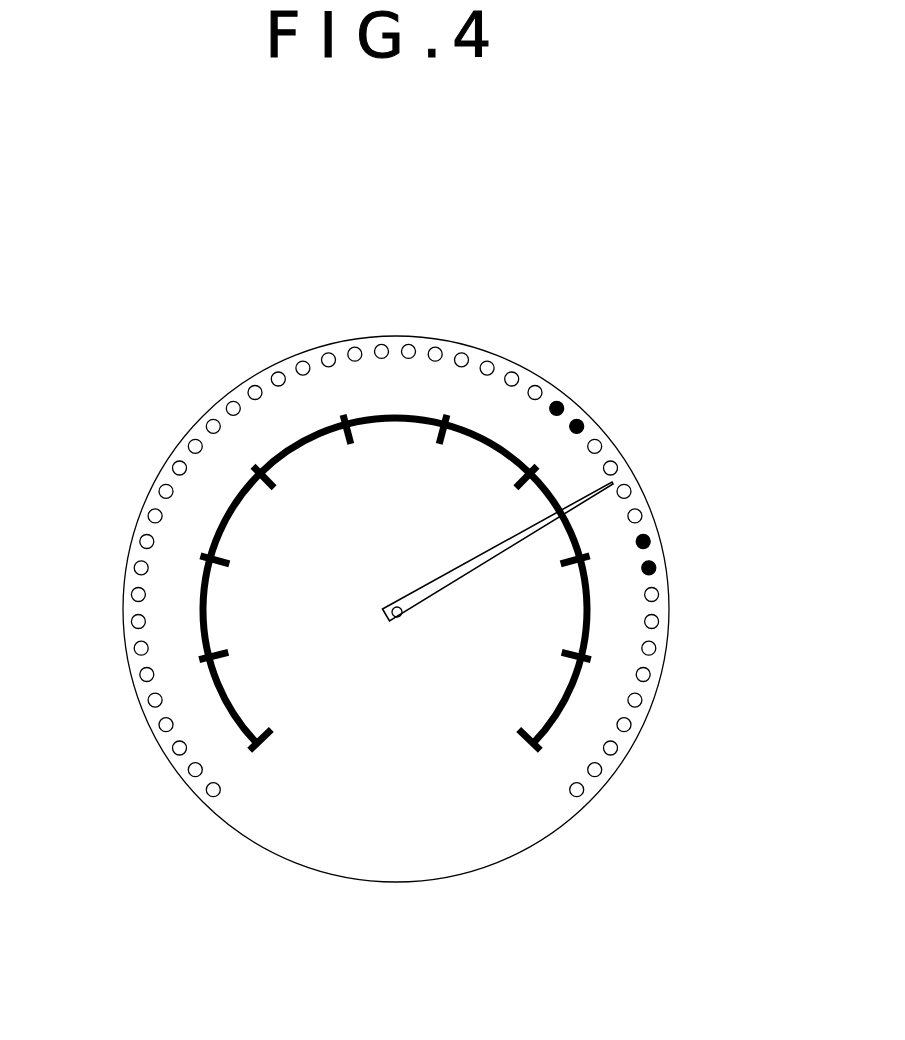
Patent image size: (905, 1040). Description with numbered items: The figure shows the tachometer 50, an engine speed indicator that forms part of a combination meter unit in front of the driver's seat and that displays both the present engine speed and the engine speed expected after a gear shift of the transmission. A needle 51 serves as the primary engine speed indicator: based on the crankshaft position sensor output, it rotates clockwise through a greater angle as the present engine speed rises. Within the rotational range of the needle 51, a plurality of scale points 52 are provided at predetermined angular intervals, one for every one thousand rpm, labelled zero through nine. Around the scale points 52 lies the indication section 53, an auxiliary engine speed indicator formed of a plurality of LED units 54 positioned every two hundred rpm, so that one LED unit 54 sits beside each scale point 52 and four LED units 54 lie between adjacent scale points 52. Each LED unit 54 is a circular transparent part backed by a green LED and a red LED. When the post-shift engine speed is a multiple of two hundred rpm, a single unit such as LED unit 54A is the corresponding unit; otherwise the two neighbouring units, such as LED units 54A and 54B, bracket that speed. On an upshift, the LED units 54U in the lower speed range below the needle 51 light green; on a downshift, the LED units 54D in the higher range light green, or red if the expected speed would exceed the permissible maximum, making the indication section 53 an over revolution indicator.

The tachometer 50 is at (664, 314).
The needle 51 is at (437, 582).
The scale points 52 is at (231, 564).
The indication section 53 is at (210, 409).
The LED units 54 is at (380, 344).
The LED unit 54A is at (489, 361).
The LED unit 54B is at (462, 353).
The LED units 54U is at (563, 407).
The LED units 54D is at (650, 541).